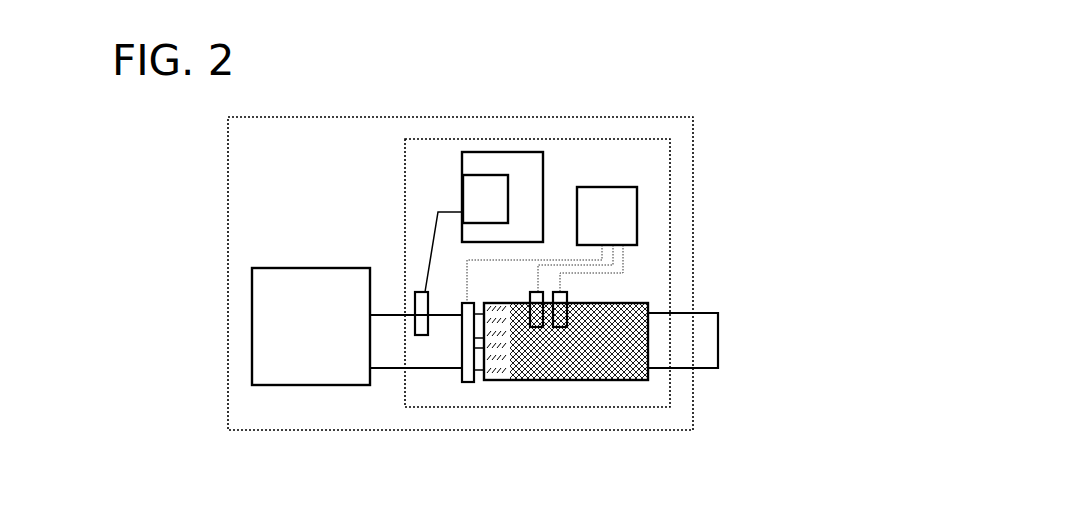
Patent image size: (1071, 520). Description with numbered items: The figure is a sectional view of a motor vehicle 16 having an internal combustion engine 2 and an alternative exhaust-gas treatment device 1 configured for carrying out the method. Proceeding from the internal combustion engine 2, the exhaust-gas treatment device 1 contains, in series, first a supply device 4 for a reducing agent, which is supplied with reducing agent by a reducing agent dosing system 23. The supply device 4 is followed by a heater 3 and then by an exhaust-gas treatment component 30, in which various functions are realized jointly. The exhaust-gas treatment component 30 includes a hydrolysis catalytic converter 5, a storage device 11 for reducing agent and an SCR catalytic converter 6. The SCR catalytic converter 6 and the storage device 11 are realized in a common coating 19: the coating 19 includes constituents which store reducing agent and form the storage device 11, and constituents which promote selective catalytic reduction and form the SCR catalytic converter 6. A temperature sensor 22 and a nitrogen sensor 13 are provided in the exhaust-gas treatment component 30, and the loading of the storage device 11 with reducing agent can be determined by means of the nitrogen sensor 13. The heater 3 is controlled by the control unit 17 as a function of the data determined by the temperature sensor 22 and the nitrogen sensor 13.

The exhaust-gas treatment device 1 is at (657, 139).
The internal combustion engine 2 is at (252, 385).
The heater 3 is at (460, 383).
The supply device 4 is at (420, 290).
The hydrolysis catalytic converter 5 is at (498, 372).
The SCR catalytic converter 6 is at (587, 380).
The storage device 11 is at (543, 362).
The nitrogen sensor 13 is at (567, 291).
The motor vehicle 16 is at (693, 117).
The control unit 17 is at (637, 210).
The coating 19 is at (627, 360).
The temperature sensor 22 is at (540, 290).
The reducing agent dosing system 23 is at (462, 152).
The exhaust-gas treatment component 30 is at (625, 360).